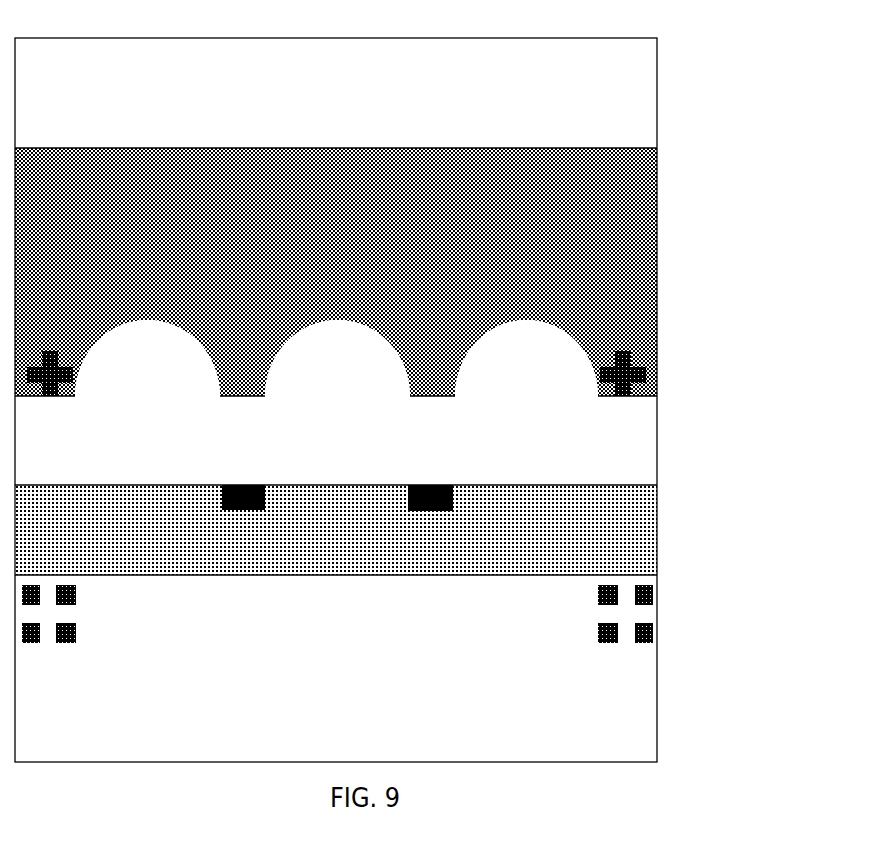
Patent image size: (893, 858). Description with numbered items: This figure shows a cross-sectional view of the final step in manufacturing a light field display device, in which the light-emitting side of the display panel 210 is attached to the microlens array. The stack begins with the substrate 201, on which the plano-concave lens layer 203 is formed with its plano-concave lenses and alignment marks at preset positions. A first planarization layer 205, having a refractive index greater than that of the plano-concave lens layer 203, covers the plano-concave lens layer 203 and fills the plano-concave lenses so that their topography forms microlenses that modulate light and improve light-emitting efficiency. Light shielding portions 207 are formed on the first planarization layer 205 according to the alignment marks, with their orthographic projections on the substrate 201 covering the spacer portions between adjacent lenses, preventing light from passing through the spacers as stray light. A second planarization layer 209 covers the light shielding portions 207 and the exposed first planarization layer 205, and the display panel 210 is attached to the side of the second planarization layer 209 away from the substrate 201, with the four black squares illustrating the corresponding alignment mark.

The substrate 201 is at (597, 93).
The plano-concave lens layer 203 is at (597, 272).
The first planarization layer 205 is at (597, 452).
The light shielding portion 207 is at (360, 518).
The second planarization layer 209 is at (597, 545).
The display panel 210 is at (596, 720).